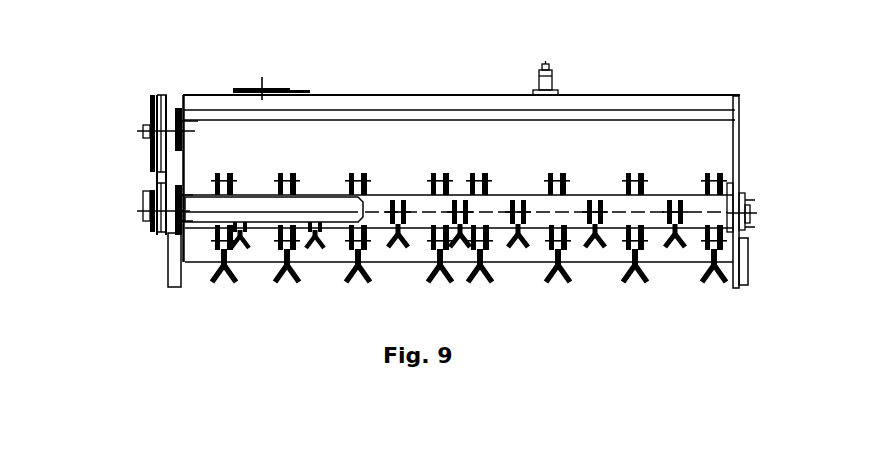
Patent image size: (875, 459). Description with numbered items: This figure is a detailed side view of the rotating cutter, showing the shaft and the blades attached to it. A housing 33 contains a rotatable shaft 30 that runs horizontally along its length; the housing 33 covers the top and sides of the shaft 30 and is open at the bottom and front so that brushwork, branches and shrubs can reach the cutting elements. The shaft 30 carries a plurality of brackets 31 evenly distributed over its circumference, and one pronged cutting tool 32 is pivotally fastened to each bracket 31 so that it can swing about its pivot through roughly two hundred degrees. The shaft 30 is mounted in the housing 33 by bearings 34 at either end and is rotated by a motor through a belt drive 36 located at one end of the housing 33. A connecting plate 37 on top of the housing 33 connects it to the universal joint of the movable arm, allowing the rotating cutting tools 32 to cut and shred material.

The rotatable shaft 30 is at (713, 207).
The brackets 31 is at (647, 183).
The pronged cutting tool 32 is at (702, 280).
The housing 33 is at (740, 103).
The bearings 34 is at (745, 223).
The belt drive 36 is at (140, 187).
The connecting plate 37 is at (272, 88).